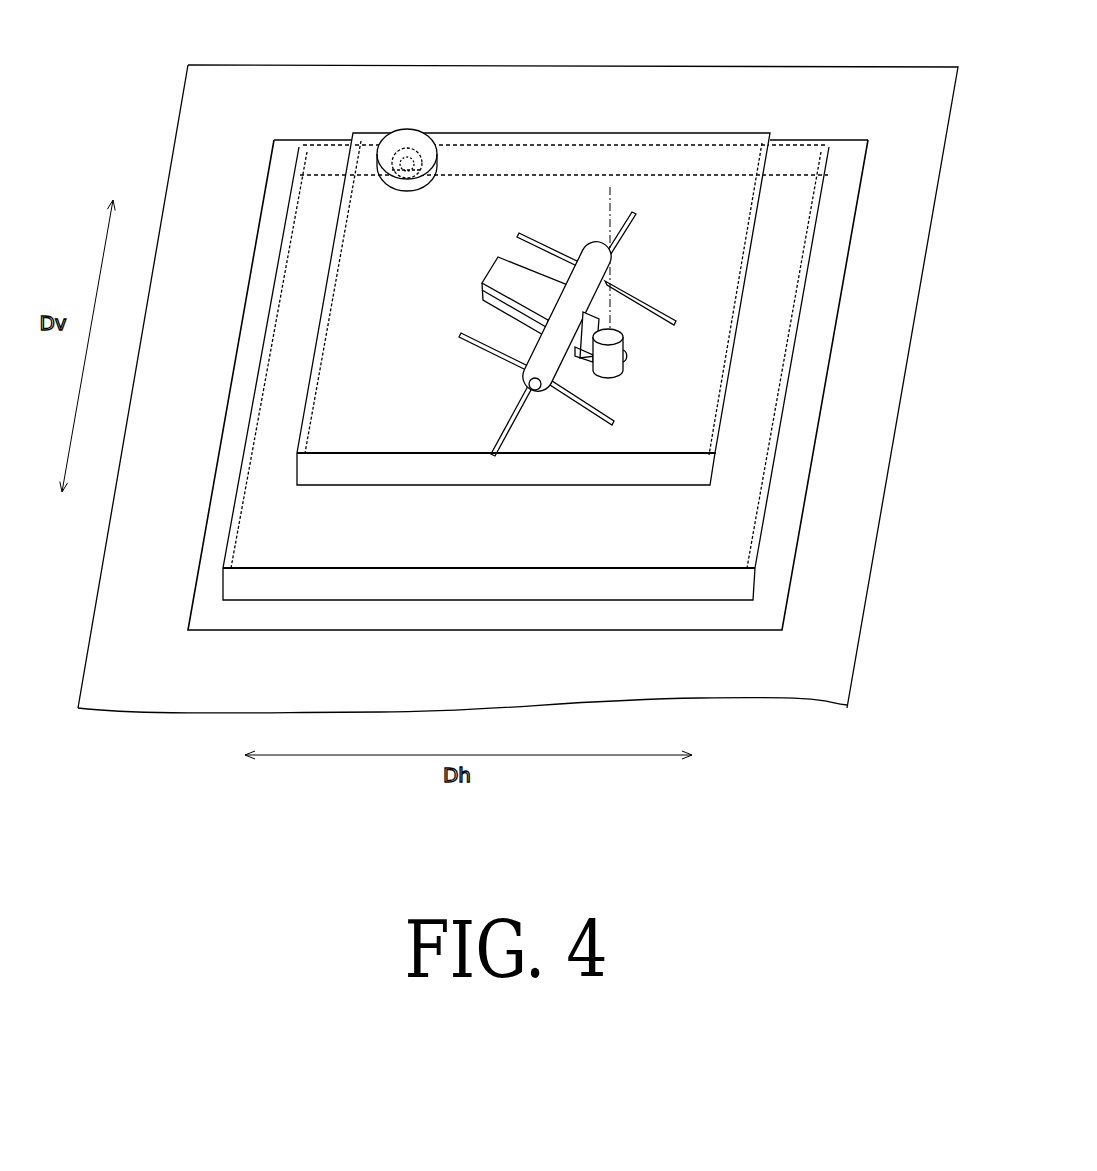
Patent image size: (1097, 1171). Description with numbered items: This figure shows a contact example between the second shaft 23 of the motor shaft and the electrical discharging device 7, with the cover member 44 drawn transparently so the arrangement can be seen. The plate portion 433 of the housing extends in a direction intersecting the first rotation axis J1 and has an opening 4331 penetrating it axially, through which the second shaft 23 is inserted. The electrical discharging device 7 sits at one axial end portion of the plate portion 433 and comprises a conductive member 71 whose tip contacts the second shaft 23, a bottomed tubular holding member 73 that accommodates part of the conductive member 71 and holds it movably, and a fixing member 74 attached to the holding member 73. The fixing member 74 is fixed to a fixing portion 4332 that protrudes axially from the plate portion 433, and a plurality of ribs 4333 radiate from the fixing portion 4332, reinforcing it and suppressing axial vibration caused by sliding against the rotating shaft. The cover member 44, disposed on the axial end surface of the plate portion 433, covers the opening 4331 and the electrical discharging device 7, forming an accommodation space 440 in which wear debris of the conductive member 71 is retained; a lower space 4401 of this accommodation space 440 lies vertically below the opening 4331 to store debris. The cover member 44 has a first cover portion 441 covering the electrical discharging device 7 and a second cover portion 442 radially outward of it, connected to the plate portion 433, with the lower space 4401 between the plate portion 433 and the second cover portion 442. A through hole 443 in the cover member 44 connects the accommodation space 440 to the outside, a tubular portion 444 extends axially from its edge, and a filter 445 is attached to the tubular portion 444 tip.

The plate portion 433 is at (233, 78).
The cover member 44 is at (574, 328).
The lower space 4401 is at (641, 533).
The second cover portion 442 is at (795, 145).
The first cover portion 441 is at (533, 256).
The accommodation space 440 is at (582, 183).
The tubular portion 444 is at (431, 137).
The through hole 443 is at (409, 155).
The filter 445 is at (433, 142).
The first rotation axis J1 is at (613, 208).
The electrical discharging device 7 is at (567, 333).
The fixing member 74 is at (578, 288).
The holding member 73 is at (508, 307).
The conductive member 71 is at (583, 358).
The second shaft 23 is at (627, 350).
The opening 4331 is at (628, 368).
The fixing portion 4332 is at (530, 380).
The rib 4333 is at (513, 420).